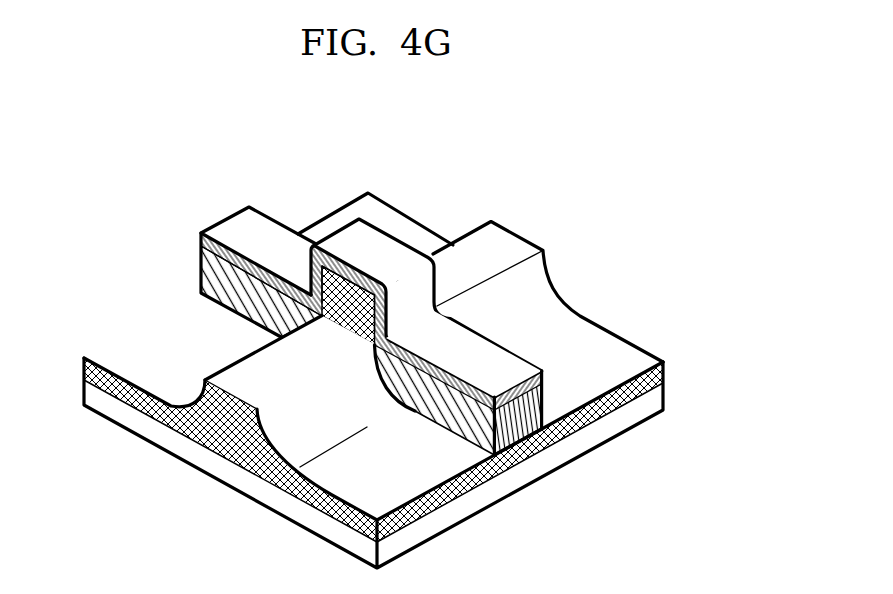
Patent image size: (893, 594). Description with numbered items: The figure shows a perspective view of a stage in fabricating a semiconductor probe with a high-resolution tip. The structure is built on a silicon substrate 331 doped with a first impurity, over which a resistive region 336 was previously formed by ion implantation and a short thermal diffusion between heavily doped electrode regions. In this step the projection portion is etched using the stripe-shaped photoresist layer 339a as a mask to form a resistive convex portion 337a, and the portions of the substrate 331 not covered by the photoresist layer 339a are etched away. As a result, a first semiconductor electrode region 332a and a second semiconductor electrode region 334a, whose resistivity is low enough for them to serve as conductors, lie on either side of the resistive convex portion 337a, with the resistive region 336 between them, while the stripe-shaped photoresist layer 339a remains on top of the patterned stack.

The silicon substrate 331 is at (662, 400).
The resistive region 336 is at (203, 441).
The first semiconductor electrode region 332a is at (201, 267).
The second semiconductor electrode region 334a is at (497, 468).
The resistive convex portion 337a is at (317, 268).
The photoresist layer 339a is at (214, 228).